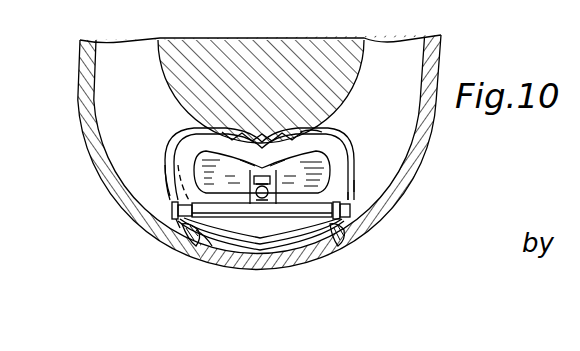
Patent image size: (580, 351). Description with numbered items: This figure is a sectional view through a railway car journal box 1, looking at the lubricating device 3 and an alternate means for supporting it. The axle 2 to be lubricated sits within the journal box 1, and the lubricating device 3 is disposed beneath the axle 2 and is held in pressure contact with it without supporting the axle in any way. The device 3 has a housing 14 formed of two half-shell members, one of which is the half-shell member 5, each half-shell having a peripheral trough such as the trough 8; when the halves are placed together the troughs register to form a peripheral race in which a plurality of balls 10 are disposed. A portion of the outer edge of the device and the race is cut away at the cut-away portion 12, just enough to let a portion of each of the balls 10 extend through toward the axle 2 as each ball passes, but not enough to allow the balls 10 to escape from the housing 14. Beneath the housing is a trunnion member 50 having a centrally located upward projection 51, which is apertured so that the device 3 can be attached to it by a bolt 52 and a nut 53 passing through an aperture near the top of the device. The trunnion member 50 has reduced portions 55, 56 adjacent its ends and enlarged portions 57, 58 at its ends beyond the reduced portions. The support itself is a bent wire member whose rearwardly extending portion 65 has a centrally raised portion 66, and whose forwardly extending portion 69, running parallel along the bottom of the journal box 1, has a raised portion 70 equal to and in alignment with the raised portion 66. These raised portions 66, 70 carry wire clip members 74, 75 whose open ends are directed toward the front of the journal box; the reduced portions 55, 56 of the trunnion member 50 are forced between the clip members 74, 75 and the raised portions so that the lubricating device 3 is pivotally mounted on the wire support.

The journal box 1 is at (81, 97).
The axle 2 is at (277, 50).
The lubricating device 3 is at (346, 133).
The half-shell member 5 is at (318, 168).
The peripheral trough 8 is at (172, 150).
The balls 10 is at (226, 132).
The cut-away portion 12 is at (330, 134).
The housing 14 is at (353, 152).
The trunnion member 50 is at (314, 214).
The upward projection 51 is at (277, 191).
The bolt 52 is at (256, 193).
The nut 53 is at (254, 180).
The reduced portion 55 is at (356, 185).
The reduced portion 56 is at (165, 174).
The enlarged portion 57 is at (352, 203).
The enlarged portion 58 is at (172, 208).
The rearwardly extending portion 65 is at (190, 246).
The raised portion 66 is at (200, 240).
The forwardly extending portion 69 is at (340, 232).
The raised portion 70 is at (346, 216).
The wire clip member 74 is at (176, 222).
The wire clip member 75 is at (338, 204).